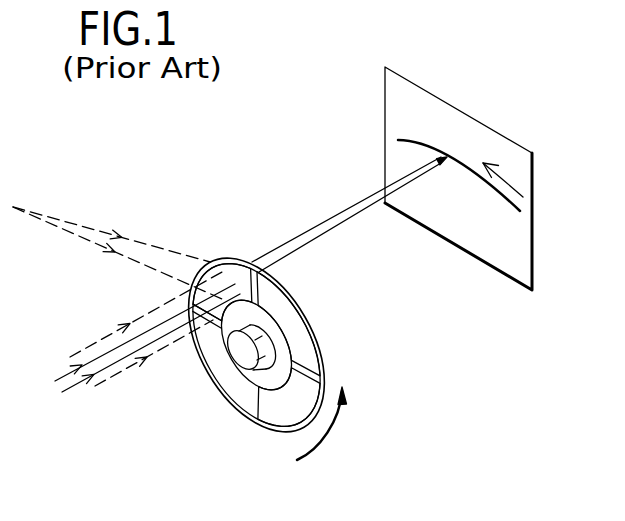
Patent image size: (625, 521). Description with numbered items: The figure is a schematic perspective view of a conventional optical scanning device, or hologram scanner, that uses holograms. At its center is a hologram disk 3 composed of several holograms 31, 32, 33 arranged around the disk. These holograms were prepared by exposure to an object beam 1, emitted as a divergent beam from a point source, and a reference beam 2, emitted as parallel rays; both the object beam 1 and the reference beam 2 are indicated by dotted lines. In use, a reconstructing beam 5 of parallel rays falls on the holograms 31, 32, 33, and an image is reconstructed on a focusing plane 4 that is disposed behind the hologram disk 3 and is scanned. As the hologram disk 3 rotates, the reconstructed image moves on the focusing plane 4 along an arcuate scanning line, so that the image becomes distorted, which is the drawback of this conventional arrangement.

The object beam 1 is at (58, 218).
The reference beam 2 is at (125, 370).
The hologram disk 3 is at (218, 402).
The hologram 31 is at (232, 282).
The hologram 32 is at (288, 326).
The hologram 33 is at (287, 403).
The focusing plane 4 is at (465, 113).
The reconstructing beam 5 is at (57, 378).